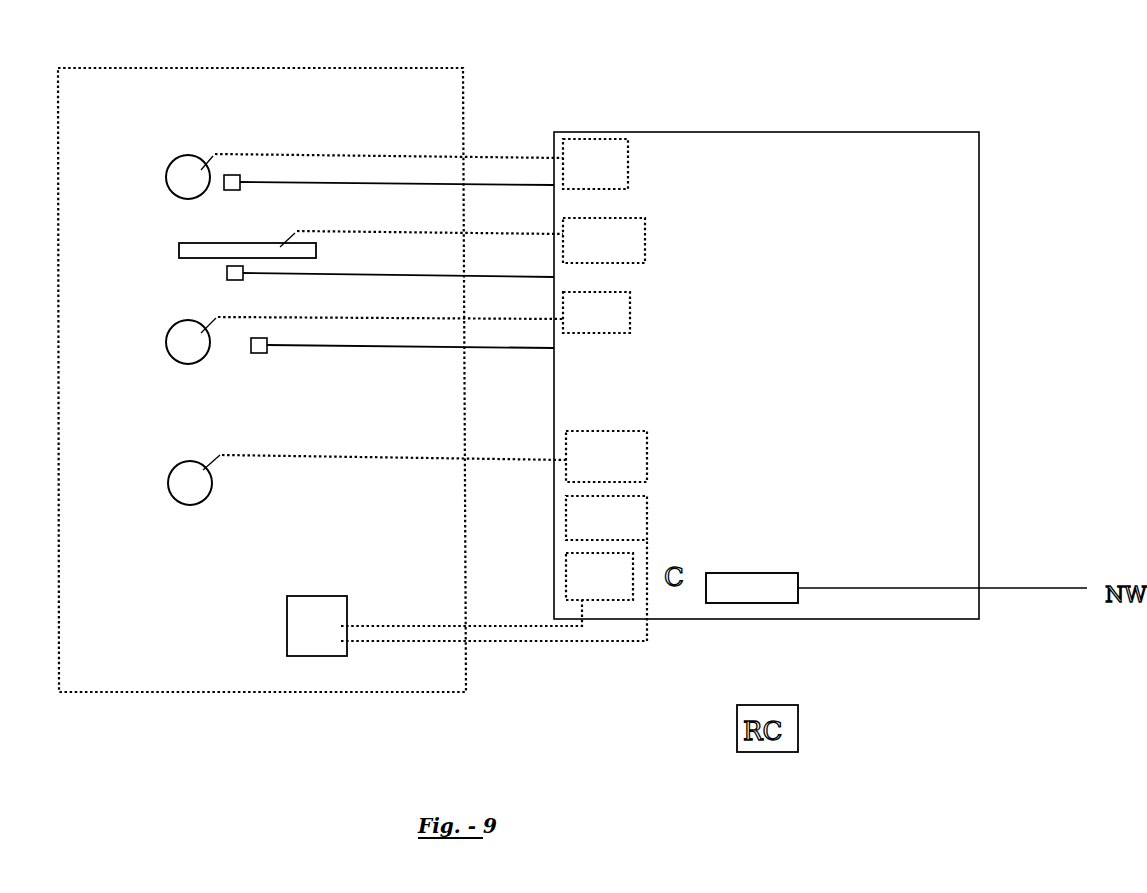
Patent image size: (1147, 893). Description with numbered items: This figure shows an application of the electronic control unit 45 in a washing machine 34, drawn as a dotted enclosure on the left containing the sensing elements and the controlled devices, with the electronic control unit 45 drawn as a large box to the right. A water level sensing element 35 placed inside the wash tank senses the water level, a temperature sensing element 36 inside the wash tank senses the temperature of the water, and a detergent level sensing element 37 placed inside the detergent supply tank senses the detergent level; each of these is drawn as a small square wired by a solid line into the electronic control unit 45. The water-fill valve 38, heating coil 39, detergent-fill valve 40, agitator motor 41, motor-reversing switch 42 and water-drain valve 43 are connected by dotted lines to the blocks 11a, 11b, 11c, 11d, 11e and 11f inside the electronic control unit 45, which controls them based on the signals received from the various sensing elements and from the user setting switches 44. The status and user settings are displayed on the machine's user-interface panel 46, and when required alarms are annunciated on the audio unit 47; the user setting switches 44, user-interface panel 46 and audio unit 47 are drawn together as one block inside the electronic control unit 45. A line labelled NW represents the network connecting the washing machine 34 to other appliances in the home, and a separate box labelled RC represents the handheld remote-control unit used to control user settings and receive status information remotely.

The washing machine 34 is at (262, 361).
The water level sensing element 35 is at (389, 199).
The temperature sensing element 36 is at (214, 272).
The detergent level sensing element 37 is at (396, 361).
The water-fill valve 38 is at (345, 176).
The heating coil 39 is at (362, 239).
The detergent-fill valve 40 is at (347, 340).
The agitator motor 41 is at (317, 608).
The motor-reversing switch 42 is at (494, 590).
The water-drain valve 43 is at (351, 480).
The user setting switches 44 is at (750, 569).
The electronic control unit 45 is at (766, 358).
The user-interface panel 46 is at (752, 569).
The audio unit 47 is at (937, 561).
The input channel 11a is at (595, 164).
The input channel 11b is at (604, 240).
The input channel 11c is at (596, 312).
The input channel 11d is at (606, 456).
The input channel 11e is at (606, 518).
The input channel 11f is at (599, 576).